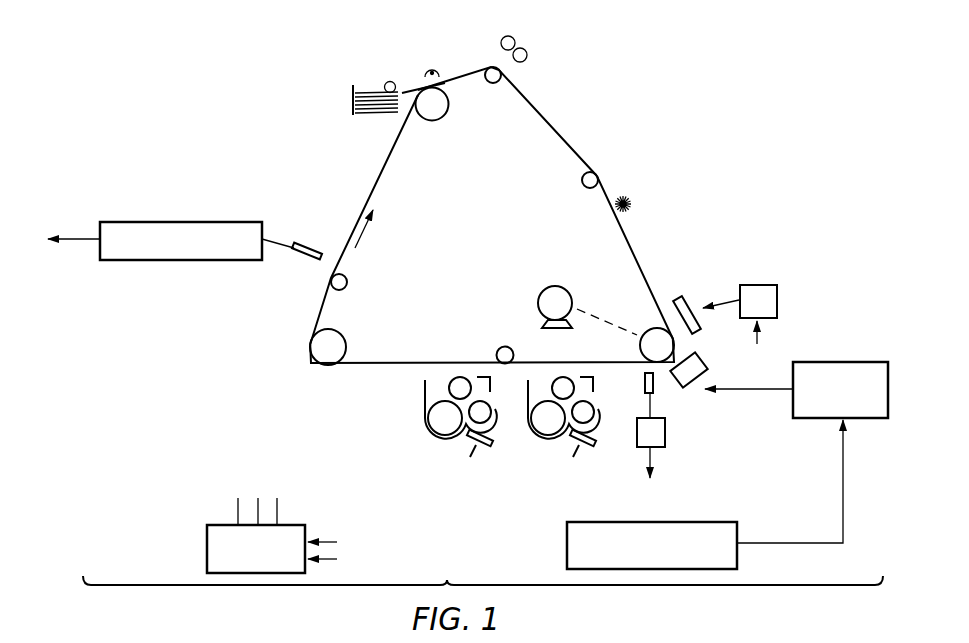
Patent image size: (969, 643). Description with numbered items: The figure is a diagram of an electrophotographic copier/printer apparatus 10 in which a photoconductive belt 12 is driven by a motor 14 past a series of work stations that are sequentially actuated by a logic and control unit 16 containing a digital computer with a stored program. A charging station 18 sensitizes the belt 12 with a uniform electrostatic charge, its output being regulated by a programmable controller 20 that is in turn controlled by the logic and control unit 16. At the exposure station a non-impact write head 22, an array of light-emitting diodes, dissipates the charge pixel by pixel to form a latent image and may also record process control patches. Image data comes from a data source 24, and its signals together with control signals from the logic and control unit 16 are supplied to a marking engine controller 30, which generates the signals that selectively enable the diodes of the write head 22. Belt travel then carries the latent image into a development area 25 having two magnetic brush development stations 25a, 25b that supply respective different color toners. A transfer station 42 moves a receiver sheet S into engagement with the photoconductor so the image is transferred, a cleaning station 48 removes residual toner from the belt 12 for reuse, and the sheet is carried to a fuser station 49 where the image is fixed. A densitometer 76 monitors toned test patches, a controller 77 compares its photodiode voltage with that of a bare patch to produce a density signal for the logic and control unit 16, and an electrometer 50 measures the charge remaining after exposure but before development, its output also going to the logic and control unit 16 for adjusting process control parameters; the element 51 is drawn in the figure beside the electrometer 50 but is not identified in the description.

The copier/printer apparatus 10 is at (617, 87).
The photoconductive belt 12 is at (377, 175).
The motor 14 is at (560, 286).
The logic and control unit (LCU) 16 is at (207, 533).
The charging station 18 is at (694, 297).
The programmable controller 20 is at (778, 298).
The non-impact write head 22 is at (733, 368).
The data source 24 is at (720, 522).
The development area 25 is at (438, 461).
The magnetic brush development station 25a is at (423, 422).
The magnetic brush development station 25b is at (534, 423).
The marking engine controller (MEC) 30 is at (850, 362).
The transfer station 42 is at (360, 67).
The cleaning station 48 is at (626, 196).
The fuser station 49 is at (531, 42).
The electrometer 50 is at (655, 388).
The signal processing unit 51 is at (665, 435).
The densitometer 76 is at (307, 245).
The controller 77 is at (233, 222).
The receiver sheet S is at (409, 88).